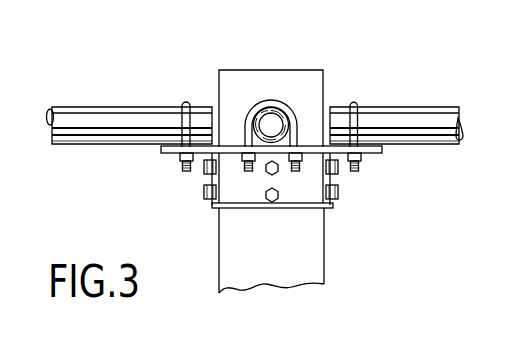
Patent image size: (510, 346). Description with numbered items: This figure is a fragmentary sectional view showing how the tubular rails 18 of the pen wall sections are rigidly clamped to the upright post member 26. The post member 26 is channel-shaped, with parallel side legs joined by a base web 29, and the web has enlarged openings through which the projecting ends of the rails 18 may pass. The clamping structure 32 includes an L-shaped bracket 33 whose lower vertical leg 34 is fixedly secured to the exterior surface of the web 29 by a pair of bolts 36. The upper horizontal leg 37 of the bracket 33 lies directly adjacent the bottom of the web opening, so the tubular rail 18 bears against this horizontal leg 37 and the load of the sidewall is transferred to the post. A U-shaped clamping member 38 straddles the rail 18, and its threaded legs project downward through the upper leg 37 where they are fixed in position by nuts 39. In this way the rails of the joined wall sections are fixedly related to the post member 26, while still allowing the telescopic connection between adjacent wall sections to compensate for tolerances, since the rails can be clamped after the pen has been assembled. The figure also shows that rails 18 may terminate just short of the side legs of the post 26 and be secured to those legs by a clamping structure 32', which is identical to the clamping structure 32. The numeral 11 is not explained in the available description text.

The frame member 11 is at (82, 152).
The tubular rail 18 is at (117, 118).
The upright post member 26 is at (333, 262).
The base web 29 is at (253, 261).
The clamping structure 32 is at (249, 87).
The clamping structure 32' is at (215, 179).
The L-shaped bracket 33 is at (233, 212).
The lower vertical leg 34 is at (305, 190).
The bolt 36 is at (273, 203).
The upper horizontal leg 37 is at (305, 147).
The U-shaped clamping member 38 is at (267, 102).
The nut 39 is at (243, 157).